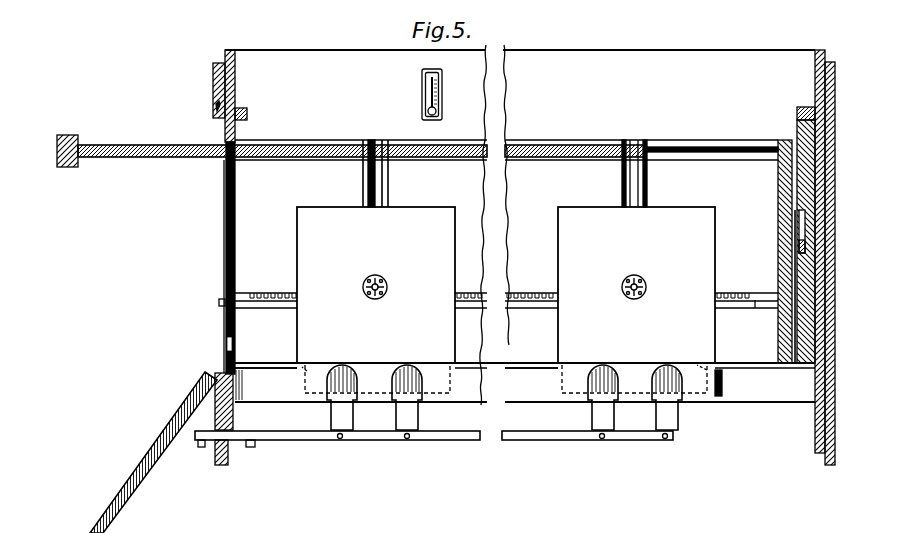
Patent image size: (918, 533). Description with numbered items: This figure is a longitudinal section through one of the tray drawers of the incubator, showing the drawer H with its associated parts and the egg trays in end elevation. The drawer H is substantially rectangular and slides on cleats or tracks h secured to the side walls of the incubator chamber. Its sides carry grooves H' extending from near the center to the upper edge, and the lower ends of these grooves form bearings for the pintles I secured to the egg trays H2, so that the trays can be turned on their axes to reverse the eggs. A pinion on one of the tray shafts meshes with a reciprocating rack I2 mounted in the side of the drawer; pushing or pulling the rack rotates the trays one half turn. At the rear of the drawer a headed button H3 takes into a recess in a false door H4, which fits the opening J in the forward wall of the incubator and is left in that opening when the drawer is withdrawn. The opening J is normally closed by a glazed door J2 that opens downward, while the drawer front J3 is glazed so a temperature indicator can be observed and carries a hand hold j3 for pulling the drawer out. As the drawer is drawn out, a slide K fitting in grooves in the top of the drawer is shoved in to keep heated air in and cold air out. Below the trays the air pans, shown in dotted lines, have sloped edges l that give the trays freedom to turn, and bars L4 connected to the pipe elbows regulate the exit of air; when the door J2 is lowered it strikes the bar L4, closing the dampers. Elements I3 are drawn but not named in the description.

The drawer H is at (520, 225).
The grooves H' is at (504, 159).
The egg trays H2 is at (506, 285).
The headed button H3 is at (798, 246).
The false door H4 is at (815, 104).
The opening J is at (235, 140).
The glazed door J2 is at (114, 510).
The glazed opening part J3 is at (235, 223).
The hand hold j3 is at (227, 343).
The slide K is at (131, 158).
The pintles I is at (305, 395).
The reciprocating rack I2 is at (270, 303).
The tubes I3 is at (652, 410).
The bars L4 is at (375, 440).
The sloped edges l is at (308, 366).
The cleats or tracks h is at (270, 369).